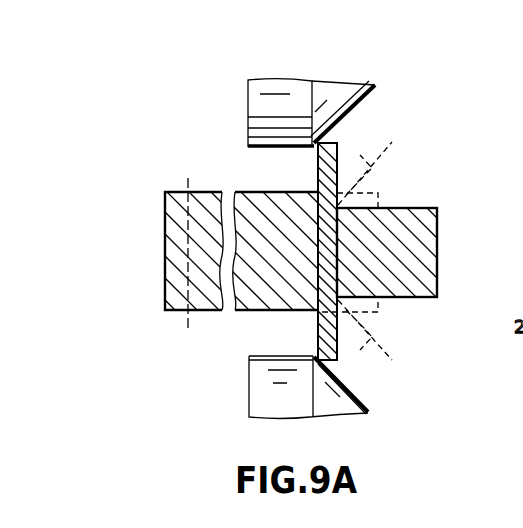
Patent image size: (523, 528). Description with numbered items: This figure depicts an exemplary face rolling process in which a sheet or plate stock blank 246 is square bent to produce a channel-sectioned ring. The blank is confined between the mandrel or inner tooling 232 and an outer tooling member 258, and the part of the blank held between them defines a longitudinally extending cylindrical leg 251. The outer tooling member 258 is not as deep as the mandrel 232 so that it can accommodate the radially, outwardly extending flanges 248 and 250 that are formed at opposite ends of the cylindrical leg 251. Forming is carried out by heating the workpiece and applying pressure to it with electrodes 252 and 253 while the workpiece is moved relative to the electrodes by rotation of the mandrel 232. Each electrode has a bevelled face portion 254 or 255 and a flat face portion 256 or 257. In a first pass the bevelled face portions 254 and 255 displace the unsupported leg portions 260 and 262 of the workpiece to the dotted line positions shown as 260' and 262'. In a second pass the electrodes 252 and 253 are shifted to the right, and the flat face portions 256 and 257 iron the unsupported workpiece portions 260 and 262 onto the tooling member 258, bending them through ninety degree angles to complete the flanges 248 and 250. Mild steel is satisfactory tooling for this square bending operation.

The mandrel 232 is at (165, 243).
The sheet or plate stock blank 246 is at (320, 240).
The flange 248 is at (378, 193).
The flange 250 is at (378, 312).
The cylindrical leg 251 is at (335, 237).
The electrode 252 is at (248, 79).
The electrode 253 is at (249, 391).
The bevelled face portion 254 is at (365, 101).
The bevelled face portion 255 is at (357, 397).
The flat face portion 256 is at (250, 146).
The flat face portion 257 is at (260, 356).
The outer tooling member 258 is at (437, 254).
The unsupported leg portion 260 is at (312, 251).
The dotted line position of unsupported leg portion 260' is at (387, 164).
The unsupported leg portion 262 is at (293, 335).
The dotted line position of unsupported leg portion 262' is at (388, 335).